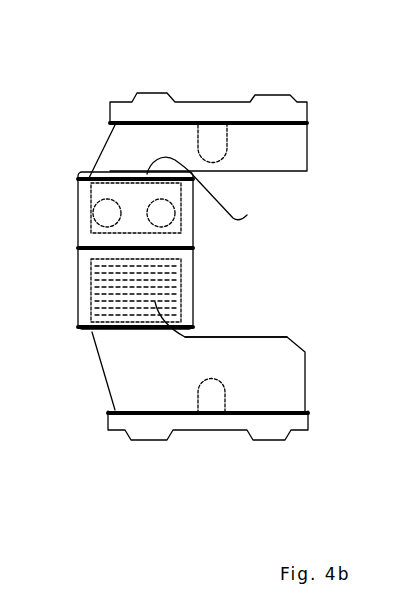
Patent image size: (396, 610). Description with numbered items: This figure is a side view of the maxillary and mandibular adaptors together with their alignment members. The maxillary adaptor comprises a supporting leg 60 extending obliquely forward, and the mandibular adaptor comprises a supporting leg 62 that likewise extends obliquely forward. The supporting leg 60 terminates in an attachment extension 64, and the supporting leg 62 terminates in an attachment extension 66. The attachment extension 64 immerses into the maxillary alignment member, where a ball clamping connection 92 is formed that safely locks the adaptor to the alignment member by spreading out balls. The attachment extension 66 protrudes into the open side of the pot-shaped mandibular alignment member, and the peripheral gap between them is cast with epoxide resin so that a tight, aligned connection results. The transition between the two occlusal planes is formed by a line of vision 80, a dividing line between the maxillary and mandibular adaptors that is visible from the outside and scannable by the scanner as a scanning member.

The supporting leg 60 is at (117, 150).
The supporting leg 62 is at (128, 362).
The attachment extension 64 is at (226, 199).
The attachment extension 66 is at (207, 335).
The line of vision 80 is at (98, 250).
The ball clamping connection 92 is at (120, 207).